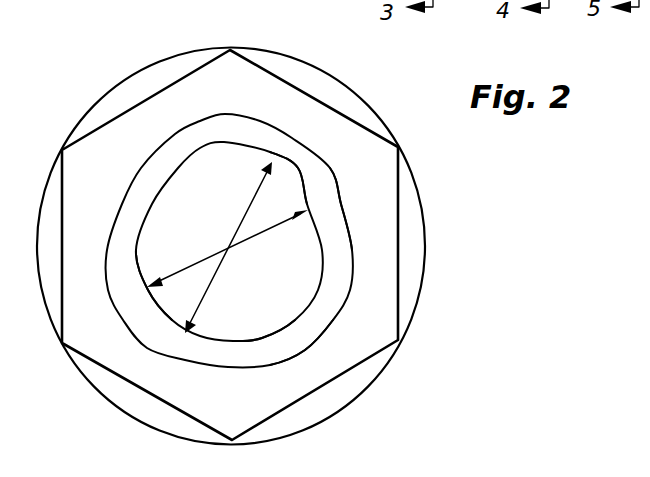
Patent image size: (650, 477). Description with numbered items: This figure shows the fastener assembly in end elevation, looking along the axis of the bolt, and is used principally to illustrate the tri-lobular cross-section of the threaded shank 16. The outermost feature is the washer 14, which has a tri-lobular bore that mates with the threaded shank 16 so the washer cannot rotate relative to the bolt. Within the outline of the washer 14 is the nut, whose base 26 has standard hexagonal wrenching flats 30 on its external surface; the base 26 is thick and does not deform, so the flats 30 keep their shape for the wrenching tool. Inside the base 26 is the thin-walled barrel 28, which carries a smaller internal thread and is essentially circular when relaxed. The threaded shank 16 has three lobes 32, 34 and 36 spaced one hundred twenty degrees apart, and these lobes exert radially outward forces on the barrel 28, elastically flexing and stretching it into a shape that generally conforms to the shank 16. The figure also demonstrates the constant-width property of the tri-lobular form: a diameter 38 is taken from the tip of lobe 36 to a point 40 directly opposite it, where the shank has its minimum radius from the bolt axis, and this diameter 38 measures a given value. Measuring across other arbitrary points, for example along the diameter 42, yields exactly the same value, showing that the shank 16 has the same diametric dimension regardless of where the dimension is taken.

The washer 14 is at (125, 90).
The hexagonal wrenching flats 30 is at (183, 77).
The base 26 is at (228, 128).
The lobe 32 is at (242, 160).
The tri-lobular threaded shank 16 is at (278, 187).
The barrel 28 is at (318, 193).
The lobe 34 is at (296, 352).
The point opposite the lobe 40 is at (310, 211).
The diameter 38 is at (263, 233).
The lobe 36 is at (145, 289).
The diameter 42 is at (232, 300).